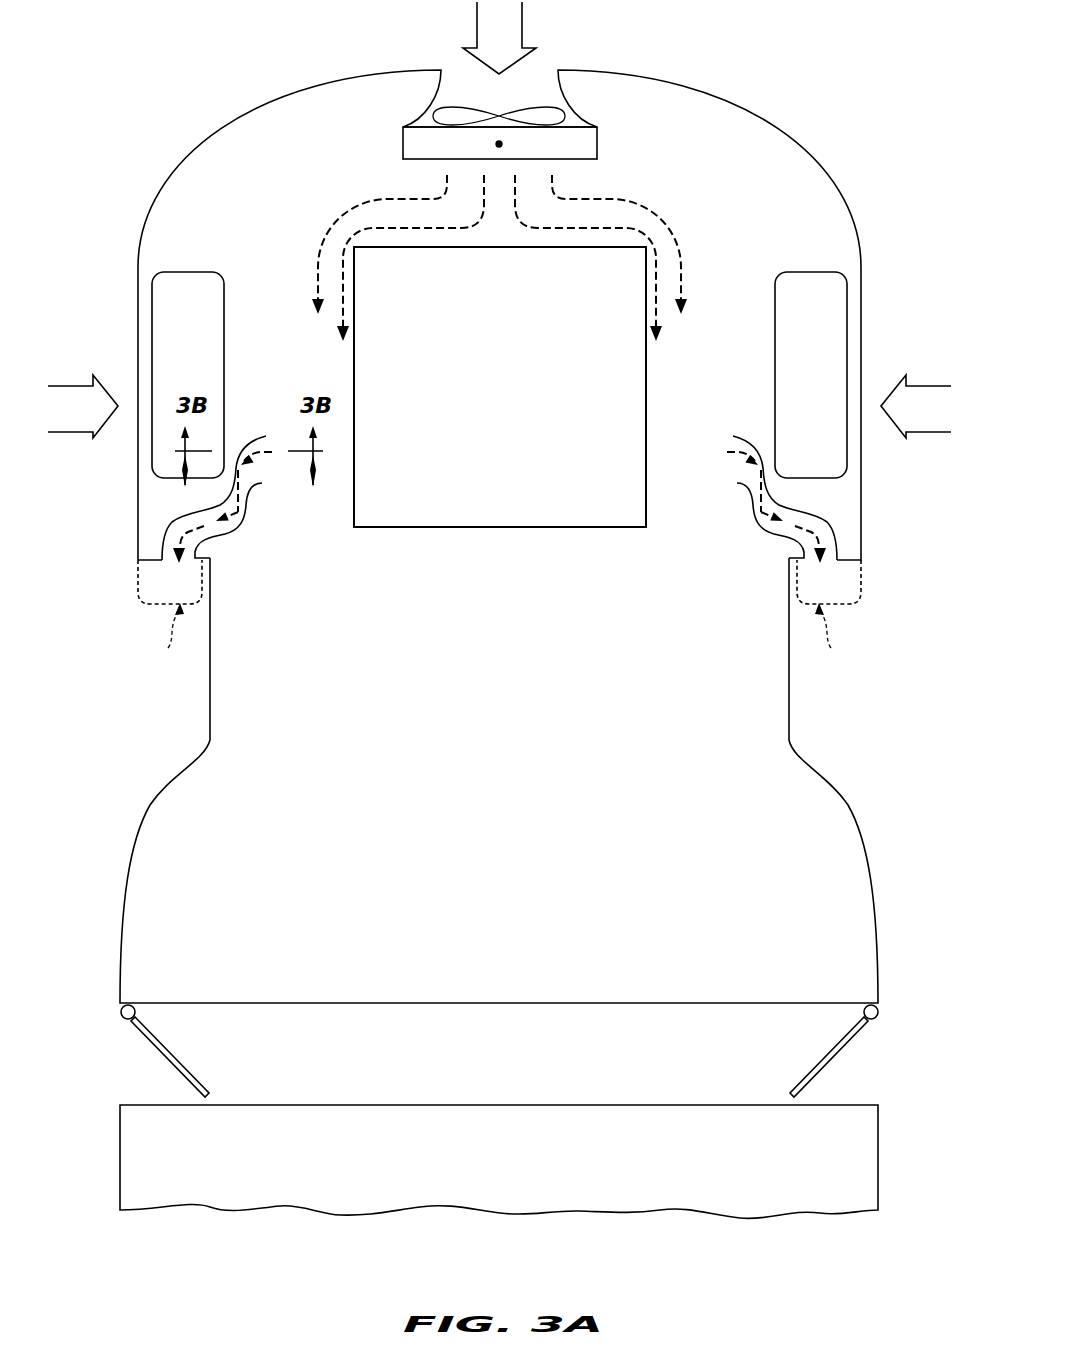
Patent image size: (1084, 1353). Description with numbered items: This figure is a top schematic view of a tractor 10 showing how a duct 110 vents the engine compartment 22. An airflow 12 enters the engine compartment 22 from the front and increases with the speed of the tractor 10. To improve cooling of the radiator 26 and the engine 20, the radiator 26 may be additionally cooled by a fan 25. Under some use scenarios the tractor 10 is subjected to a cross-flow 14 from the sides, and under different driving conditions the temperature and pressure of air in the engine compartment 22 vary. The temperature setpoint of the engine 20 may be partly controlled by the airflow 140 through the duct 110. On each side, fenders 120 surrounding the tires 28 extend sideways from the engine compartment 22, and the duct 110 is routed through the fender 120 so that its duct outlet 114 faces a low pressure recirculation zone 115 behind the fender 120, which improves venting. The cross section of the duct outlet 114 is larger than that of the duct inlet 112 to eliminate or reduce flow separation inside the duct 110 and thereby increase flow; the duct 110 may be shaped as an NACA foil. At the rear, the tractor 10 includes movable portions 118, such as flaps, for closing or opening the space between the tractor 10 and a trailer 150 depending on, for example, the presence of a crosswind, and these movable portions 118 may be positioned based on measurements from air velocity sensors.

The tractor 10 is at (499, 530).
The airflow 12 is at (499, 38).
The cross-flow 14 is at (500, 406).
The engine 20 is at (640, 373).
The engine compartment 22 is at (312, 135).
The fan 25 is at (542, 108).
The radiator 26 is at (588, 140).
The tires 28 is at (180, 302).
The duct 110 is at (169, 525).
The duct inlet 112 is at (265, 442).
The duct outlet 114 is at (170, 552).
The low pressure recirculation zone 115 is at (499, 640).
The movable portions 118 is at (152, 1045).
The fender 120 is at (828, 167).
The airflow 140 is at (192, 527).
The trailer 150 is at (875, 1157).